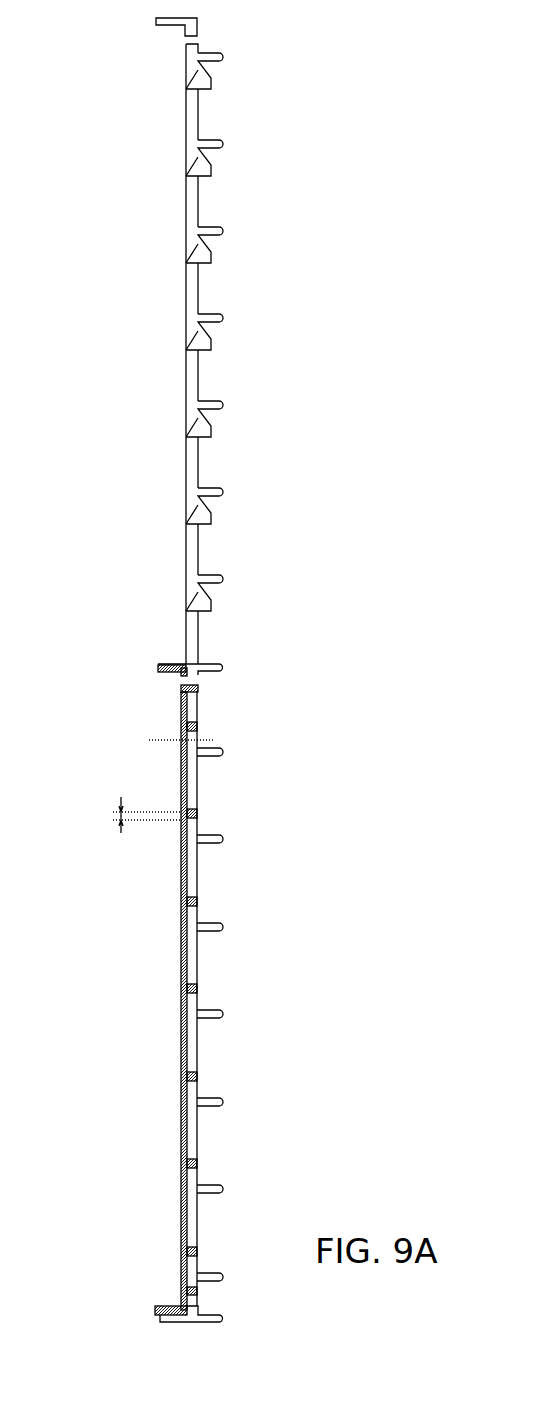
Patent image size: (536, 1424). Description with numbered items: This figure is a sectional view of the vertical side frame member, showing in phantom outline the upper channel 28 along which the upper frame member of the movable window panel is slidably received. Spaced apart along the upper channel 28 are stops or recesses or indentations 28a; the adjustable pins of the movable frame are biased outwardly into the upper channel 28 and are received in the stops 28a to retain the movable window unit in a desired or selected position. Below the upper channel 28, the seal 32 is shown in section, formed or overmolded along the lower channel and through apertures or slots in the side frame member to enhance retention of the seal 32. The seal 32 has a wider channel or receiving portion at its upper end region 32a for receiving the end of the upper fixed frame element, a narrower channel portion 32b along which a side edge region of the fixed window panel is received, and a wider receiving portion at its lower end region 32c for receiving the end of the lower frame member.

The upper channel 28 is at (186, 302).
The stop 28a is at (186, 163).
The seal 32 is at (180, 1040).
The upper end region 32a is at (182, 688).
The narrower channel portion 32b is at (180, 974).
The lower end region 32c is at (183, 1290).